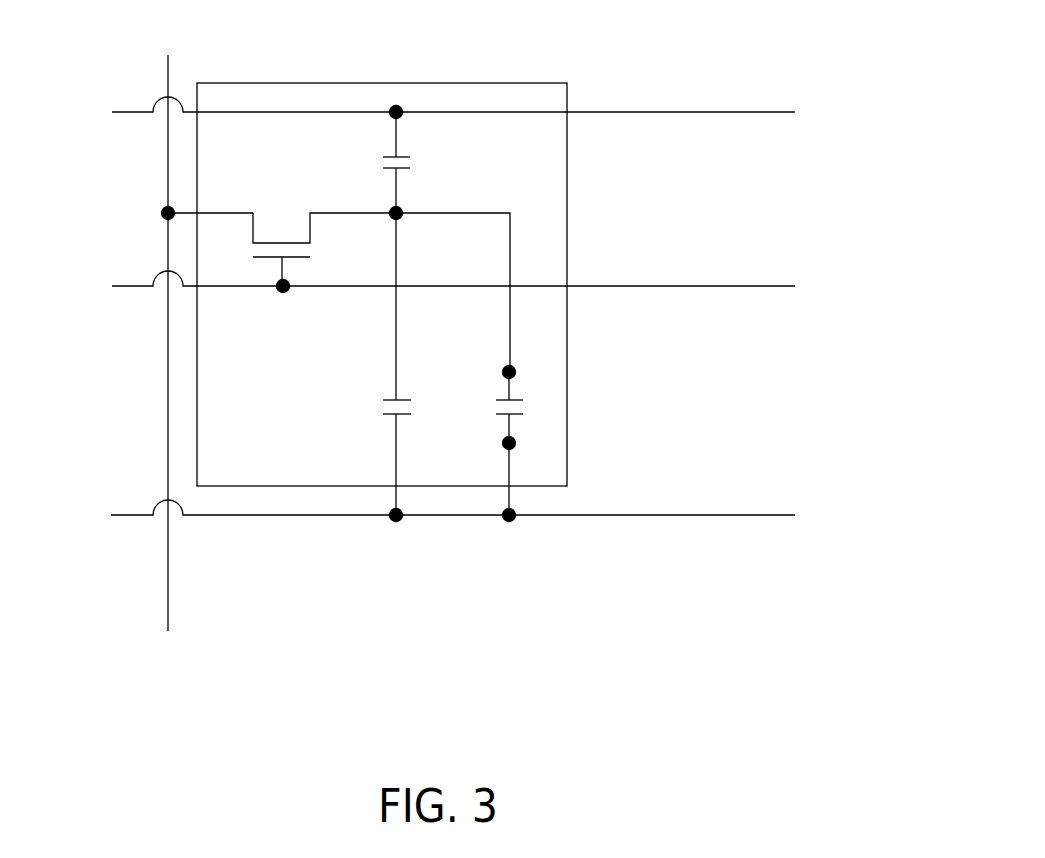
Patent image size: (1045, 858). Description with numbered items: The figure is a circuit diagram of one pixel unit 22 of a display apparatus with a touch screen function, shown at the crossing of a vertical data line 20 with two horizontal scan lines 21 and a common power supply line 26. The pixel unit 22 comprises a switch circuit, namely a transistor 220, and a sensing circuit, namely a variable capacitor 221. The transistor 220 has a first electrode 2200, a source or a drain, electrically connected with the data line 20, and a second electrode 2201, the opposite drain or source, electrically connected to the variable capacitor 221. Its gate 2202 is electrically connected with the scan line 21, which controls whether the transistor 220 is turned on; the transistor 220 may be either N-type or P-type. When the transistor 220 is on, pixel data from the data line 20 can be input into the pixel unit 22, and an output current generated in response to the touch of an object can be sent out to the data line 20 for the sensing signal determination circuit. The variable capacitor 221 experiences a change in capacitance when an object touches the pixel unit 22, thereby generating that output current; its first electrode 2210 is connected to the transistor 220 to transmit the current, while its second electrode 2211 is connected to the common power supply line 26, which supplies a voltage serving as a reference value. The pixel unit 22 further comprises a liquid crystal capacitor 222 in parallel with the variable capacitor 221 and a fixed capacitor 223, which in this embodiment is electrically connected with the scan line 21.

The data line 20 is at (168, 572).
The scan line 21 is at (594, 112).
The pixel unit 22 is at (445, 83).
The common power supply line 26 is at (595, 515).
The transistor 220 is at (302, 203).
The variable capacitor 221 is at (481, 407).
The liquid crystal capacitor 222 is at (367, 407).
The fixed capacitor 223 is at (428, 170).
The first electrode 2200 is at (161, 212).
The second electrode 2201 is at (401, 210).
The gate 2202 is at (283, 292).
The first electrode 2210 is at (515, 369).
The second electrode 2211 is at (515, 441).